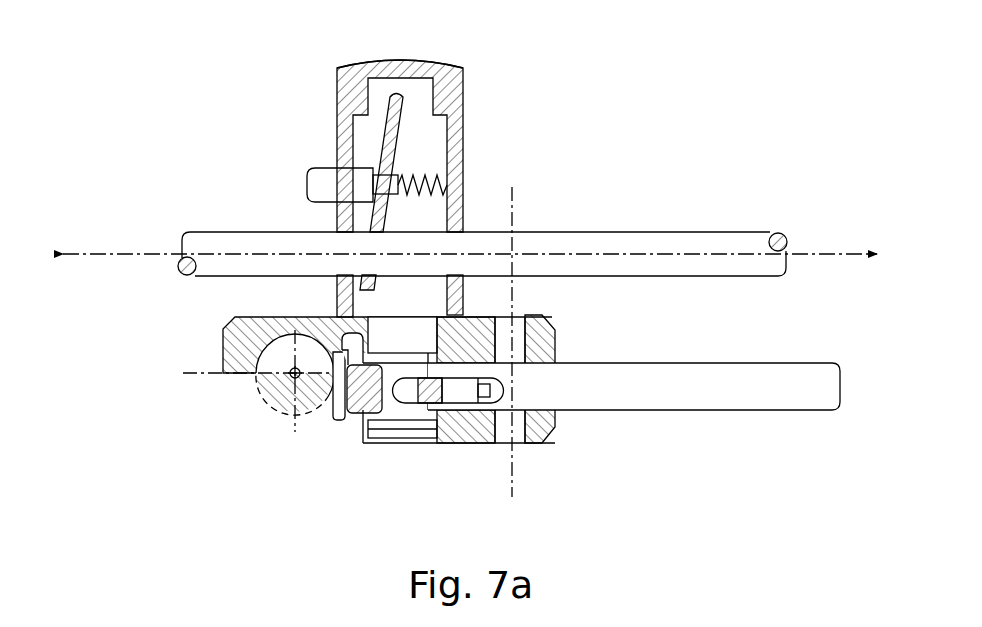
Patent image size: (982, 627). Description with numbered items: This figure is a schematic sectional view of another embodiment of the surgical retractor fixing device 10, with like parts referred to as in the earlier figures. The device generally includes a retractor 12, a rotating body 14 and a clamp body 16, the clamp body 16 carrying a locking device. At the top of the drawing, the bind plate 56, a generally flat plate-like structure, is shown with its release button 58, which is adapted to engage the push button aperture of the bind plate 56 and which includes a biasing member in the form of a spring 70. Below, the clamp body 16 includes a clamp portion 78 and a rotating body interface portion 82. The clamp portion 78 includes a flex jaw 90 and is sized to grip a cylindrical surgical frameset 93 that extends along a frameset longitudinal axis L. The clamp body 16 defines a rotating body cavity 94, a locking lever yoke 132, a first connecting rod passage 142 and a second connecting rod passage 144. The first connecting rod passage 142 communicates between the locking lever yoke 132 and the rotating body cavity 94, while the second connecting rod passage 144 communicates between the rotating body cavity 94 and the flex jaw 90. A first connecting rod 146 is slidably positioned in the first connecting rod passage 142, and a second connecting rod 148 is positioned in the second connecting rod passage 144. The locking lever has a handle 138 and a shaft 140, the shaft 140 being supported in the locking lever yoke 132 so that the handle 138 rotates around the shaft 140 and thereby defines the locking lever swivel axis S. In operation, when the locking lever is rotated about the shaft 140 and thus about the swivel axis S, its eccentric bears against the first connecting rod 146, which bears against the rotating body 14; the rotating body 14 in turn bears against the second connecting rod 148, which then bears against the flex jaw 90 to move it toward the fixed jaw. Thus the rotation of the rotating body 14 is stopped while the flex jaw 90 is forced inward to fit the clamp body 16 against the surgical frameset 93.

The surgical retractor fixing device 10 is at (648, 68).
The retractor 12 is at (695, 240).
The rotating body 14 is at (463, 100).
The clamp body 16 is at (180, 432).
The bind plate 56 is at (380, 143).
The release button 58 is at (308, 185).
The spring 70 is at (447, 185).
The clamp portion 78 is at (222, 323).
The rotating body interface portion 82 is at (323, 298).
The flex jaw 90 is at (335, 410).
The cylindrical surgical frameset 93 is at (275, 385).
The rotating body cavity 94 is at (430, 445).
The locking lever yoke 132 is at (545, 428).
The handle 138 is at (781, 372).
The shaft 140 is at (522, 314).
The first connecting rod passage 142 is at (445, 410).
The second connecting rod passage 144 is at (357, 418).
The first connecting rod 146 is at (455, 410).
The second connecting rod 148 is at (372, 440).
The frameset longitudinal axis L is at (280, 380).
The locking lever swivel axis S is at (512, 470).